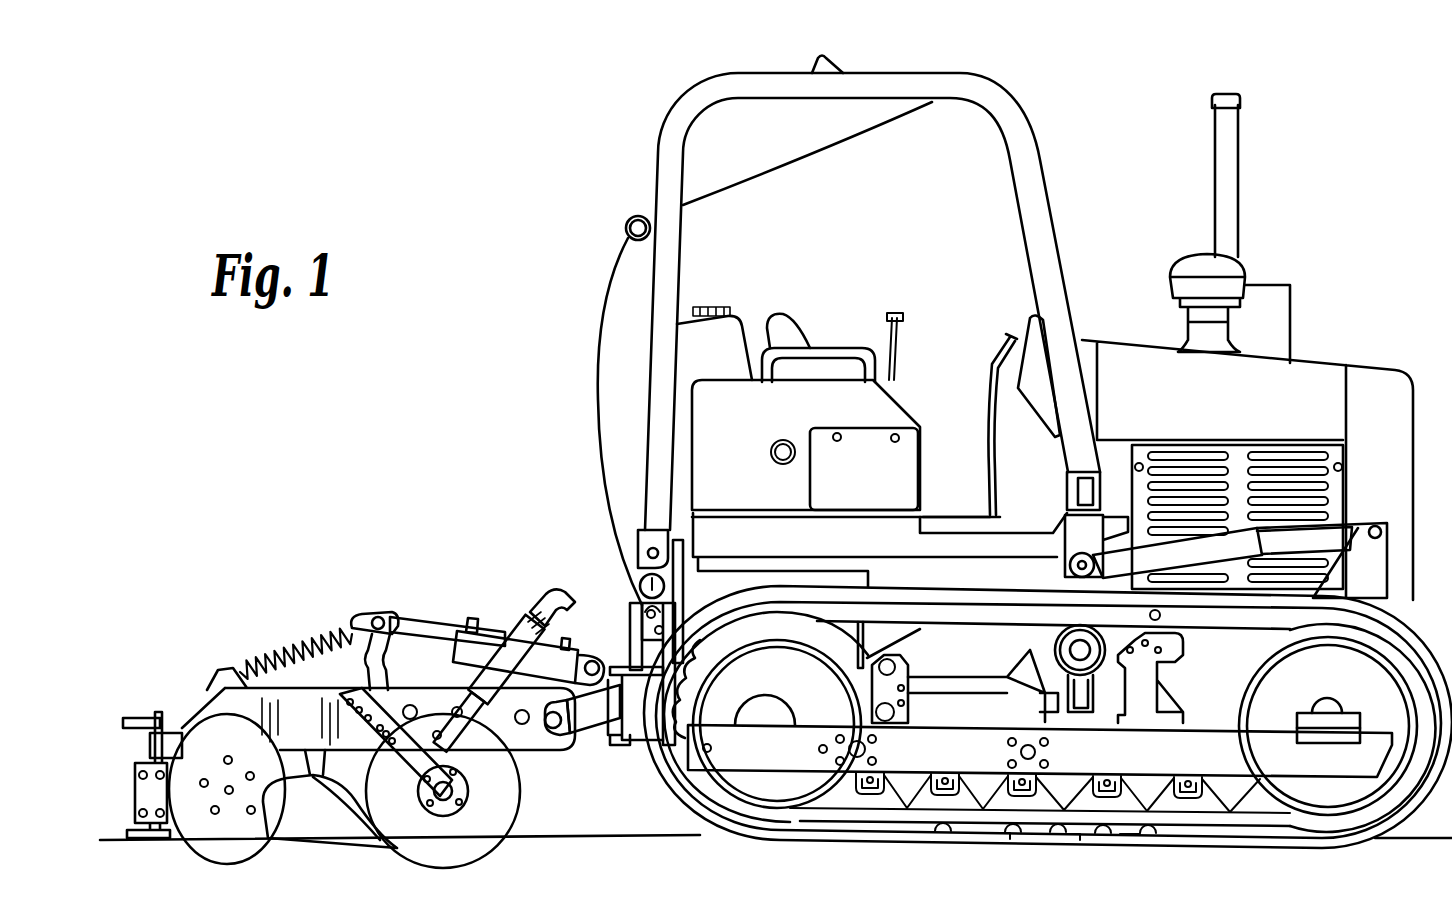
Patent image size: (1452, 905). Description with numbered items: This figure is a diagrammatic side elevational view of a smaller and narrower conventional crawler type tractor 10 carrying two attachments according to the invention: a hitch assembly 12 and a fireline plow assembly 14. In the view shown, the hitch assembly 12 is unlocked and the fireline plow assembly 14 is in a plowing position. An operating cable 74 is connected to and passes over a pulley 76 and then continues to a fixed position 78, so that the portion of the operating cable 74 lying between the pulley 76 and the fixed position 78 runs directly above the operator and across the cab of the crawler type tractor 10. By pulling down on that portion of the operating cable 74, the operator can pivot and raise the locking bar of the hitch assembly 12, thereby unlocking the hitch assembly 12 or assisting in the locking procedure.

The crawler type tractor 10 is at (1290, 88).
The hitch assembly 12 is at (458, 578).
The fireline plow assembly 14 is at (184, 645).
The operating cable 74 is at (596, 397).
The pulley 76 is at (648, 262).
The fixed position 78 is at (962, 100).